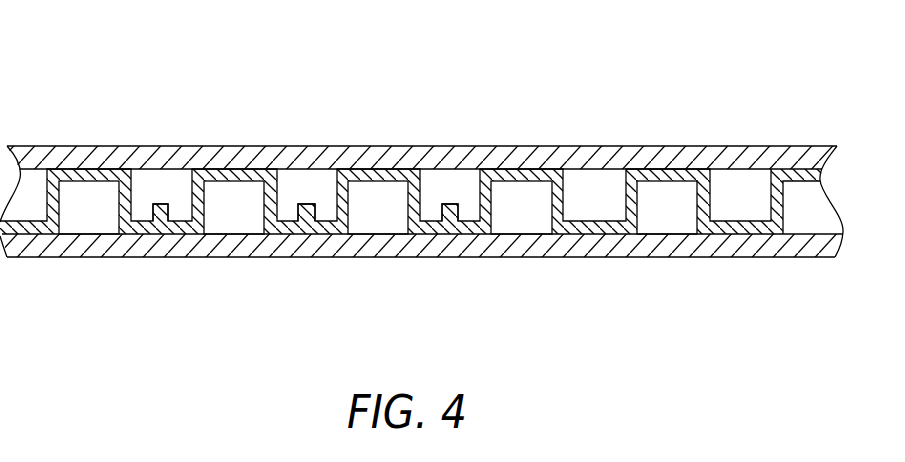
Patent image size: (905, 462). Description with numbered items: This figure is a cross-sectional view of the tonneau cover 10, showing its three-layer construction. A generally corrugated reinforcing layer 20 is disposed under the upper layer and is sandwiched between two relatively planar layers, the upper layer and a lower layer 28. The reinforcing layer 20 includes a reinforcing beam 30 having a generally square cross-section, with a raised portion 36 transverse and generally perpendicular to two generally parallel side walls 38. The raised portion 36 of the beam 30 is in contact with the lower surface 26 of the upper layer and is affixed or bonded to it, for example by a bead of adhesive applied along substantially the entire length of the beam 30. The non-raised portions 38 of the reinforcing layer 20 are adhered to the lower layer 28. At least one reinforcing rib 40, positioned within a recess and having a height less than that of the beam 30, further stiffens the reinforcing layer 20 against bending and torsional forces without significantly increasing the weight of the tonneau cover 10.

The tonneau cover 10 is at (709, 96).
The reinforcing layer 20 is at (783, 213).
The lower surface of the upper layer 26 is at (250, 188).
The lower layer 28 is at (477, 250).
The reinforcing beam 30 is at (349, 203).
The raised portion 36 is at (77, 172).
The side walls 38 is at (128, 197).
The reinforcing rib 40 is at (157, 204).